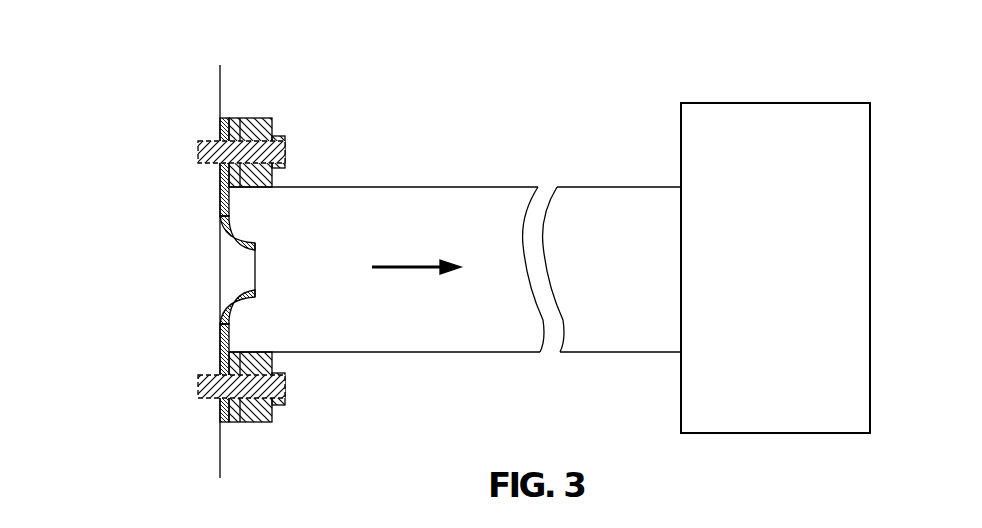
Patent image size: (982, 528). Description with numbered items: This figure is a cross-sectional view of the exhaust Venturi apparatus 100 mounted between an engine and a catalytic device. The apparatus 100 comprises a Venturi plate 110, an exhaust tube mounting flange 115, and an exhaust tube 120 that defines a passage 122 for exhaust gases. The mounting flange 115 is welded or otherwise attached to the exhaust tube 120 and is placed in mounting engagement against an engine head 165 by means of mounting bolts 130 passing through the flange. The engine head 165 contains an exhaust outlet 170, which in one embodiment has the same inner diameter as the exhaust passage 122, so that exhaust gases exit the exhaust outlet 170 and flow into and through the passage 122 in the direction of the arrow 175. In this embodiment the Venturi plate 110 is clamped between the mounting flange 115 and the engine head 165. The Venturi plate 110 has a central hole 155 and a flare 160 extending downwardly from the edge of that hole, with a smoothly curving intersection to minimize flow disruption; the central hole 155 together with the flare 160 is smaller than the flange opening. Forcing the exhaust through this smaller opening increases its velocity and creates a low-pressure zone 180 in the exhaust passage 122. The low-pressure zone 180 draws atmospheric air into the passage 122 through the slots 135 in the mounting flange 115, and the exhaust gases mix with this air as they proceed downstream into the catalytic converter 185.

The exhaust Venturi apparatus 100 is at (164, 78).
The Venturi plate 110 is at (220, 430).
The exhaust tube mounting flange 115 is at (251, 117).
The exhaust tube 120 is at (600, 187).
The exhaust gas passage 122 is at (422, 315).
The mounting bolts 130 is at (285, 150).
The slots 135 is at (230, 117).
The central hole 155 is at (253, 277).
The flare 160 is at (238, 306).
The engine head 165 is at (163, 319).
The exhaust outlet 170 is at (203, 273).
The arrow 175 is at (403, 265).
The low-pressure zone 180 is at (252, 218).
The catalytic converter 185 is at (800, 271).